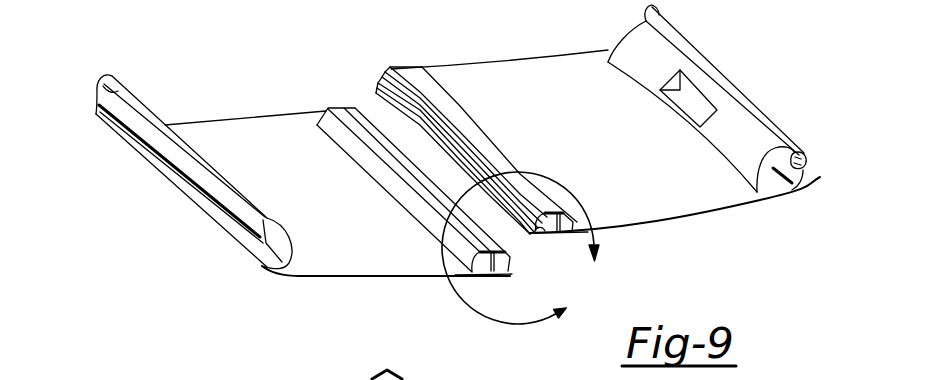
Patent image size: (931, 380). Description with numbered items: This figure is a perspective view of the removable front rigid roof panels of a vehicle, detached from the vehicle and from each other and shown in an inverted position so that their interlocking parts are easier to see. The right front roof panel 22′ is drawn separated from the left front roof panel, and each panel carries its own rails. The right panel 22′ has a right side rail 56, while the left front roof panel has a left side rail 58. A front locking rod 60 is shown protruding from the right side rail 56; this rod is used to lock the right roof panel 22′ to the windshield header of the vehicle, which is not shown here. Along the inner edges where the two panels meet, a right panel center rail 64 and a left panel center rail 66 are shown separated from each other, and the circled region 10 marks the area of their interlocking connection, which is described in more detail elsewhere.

The connection detail 10 is at (523, 248).
The right front roof panel 22′ is at (580, 76).
The right side rail 56 is at (727, 147).
The left side rail 58 is at (100, 88).
The front locking rod 60 is at (807, 182).
The right panel center rail 64 is at (472, 131).
The left panel center rail 66 is at (358, 158).